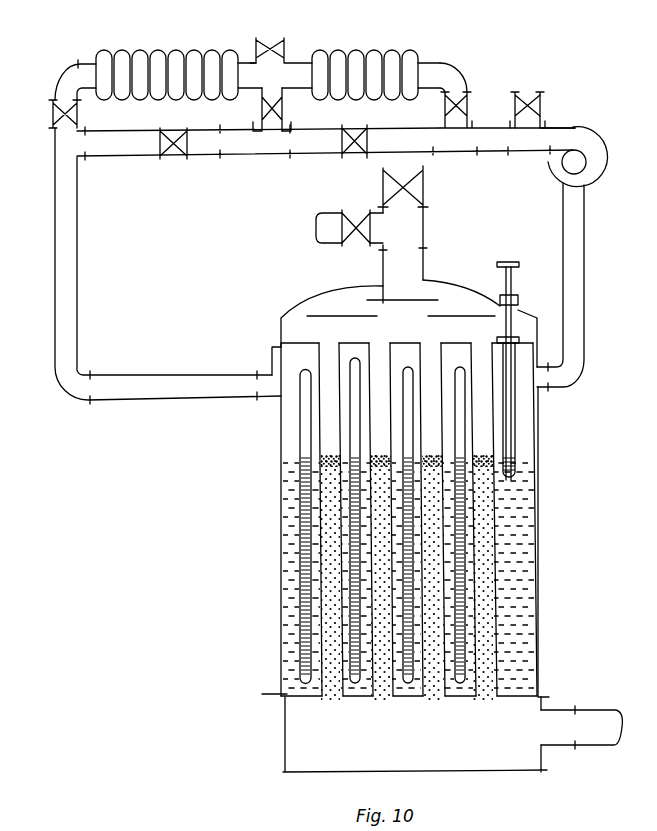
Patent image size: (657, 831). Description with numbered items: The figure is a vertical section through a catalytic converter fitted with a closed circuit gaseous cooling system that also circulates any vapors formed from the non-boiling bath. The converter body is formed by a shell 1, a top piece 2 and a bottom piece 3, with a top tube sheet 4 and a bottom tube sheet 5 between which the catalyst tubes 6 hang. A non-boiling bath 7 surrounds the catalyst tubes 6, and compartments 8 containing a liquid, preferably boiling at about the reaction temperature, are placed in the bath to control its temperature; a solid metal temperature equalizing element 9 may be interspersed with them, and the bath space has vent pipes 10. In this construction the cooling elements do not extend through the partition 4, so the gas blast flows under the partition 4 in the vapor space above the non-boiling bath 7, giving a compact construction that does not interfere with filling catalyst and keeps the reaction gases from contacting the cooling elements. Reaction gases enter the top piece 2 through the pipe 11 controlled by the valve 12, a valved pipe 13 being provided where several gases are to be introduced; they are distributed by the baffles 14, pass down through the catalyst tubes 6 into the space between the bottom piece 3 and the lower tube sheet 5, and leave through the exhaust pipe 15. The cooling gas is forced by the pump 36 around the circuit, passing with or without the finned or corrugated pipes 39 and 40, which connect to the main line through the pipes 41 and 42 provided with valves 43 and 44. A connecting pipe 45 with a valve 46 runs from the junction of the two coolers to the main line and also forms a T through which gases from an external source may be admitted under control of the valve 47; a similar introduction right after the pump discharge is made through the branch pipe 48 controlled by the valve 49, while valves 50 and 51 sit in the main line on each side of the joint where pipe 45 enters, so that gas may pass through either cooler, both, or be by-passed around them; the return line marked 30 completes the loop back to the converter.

The shell 1 is at (282, 508).
The top piece 2 is at (451, 284).
The bottom piece 3 is at (432, 771).
The top tube sheet 4 is at (272, 347).
The bottom tube sheet 5 is at (401, 694).
The catalyst tubes 6 is at (324, 618).
The non-boiling bath 7 is at (285, 580).
The compartments 8 is at (298, 398).
The solid metal temperature equalizing element 9 is at (518, 266).
The vent pipes 10 is at (543, 389).
The pipe 11 is at (428, 258).
The valve 12 is at (423, 186).
The valved pipe 13 is at (323, 212).
The baffles 14 is at (383, 290).
The exhaust pipe 15 is at (581, 716).
The circulation pipe 30 is at (53, 241).
The pump 36 is at (580, 168).
The finned or corrugated pipe 39 is at (355, 50).
The finned or corrugated pipe 40 is at (176, 50).
The pipe 41 is at (460, 78).
The pipe 42 is at (60, 80).
The valve 43 is at (468, 105).
The valve 44 is at (52, 112).
The connecting pipe 45 is at (292, 93).
The valve 46 is at (262, 112).
The valve 47 is at (286, 45).
The branch pipe 48 is at (543, 120).
The valve 49 is at (528, 93).
The valve 50 is at (357, 157).
The valve 51 is at (173, 158).